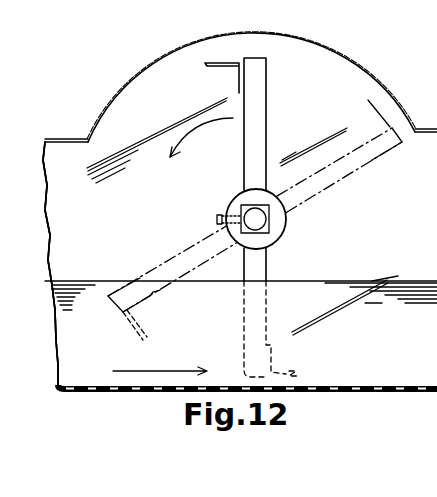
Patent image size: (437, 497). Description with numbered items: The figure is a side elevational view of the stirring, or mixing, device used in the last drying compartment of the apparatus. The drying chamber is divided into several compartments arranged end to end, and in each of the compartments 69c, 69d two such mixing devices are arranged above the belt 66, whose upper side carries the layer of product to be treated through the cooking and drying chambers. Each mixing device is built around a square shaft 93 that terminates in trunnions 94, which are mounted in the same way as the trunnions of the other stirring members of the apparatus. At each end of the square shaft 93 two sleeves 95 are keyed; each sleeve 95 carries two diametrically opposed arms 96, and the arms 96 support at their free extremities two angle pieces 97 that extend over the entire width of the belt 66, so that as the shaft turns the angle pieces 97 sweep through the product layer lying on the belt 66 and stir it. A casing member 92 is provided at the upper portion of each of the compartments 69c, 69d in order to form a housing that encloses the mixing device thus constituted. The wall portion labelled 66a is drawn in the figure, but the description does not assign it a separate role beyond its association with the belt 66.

The casing member 92 is at (347, 57).
The angle piece 97 is at (219, 62).
The arm 96 is at (264, 90).
The sleeve 95 is at (240, 192).
The trunnion 94 is at (257, 219).
The square shaft 93 is at (236, 213).
The drying compartment 69c is at (68, 165).
The drying compartment 69d is at (50, 263).
The tank side wall 66a is at (78, 335).
The belt 66 is at (135, 392).